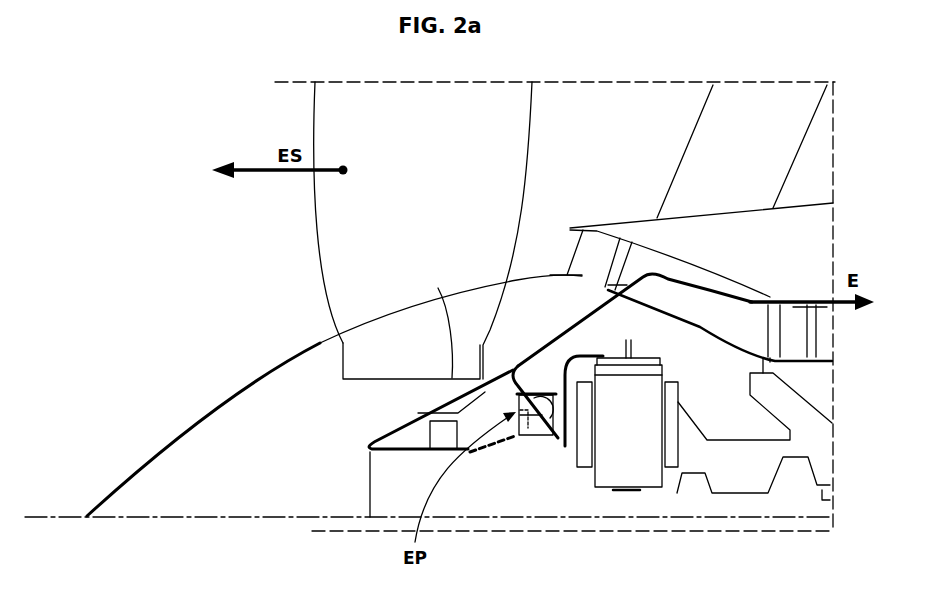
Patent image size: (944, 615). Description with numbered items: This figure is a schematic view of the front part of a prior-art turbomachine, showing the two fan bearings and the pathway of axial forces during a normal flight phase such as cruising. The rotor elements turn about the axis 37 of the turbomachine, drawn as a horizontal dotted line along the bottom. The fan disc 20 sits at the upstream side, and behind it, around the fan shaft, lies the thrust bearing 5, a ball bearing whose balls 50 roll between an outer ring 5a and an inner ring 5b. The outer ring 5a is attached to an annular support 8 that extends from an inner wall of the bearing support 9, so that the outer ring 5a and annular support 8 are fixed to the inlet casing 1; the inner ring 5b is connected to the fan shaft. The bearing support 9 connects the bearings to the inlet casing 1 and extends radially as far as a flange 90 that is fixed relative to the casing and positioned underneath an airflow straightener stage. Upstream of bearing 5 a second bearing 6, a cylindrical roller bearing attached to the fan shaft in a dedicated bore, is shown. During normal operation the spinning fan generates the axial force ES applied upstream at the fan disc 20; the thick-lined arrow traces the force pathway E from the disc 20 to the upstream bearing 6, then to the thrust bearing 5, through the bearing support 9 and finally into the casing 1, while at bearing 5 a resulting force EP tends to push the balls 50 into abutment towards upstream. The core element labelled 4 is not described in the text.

The inlet casing 1 is at (686, 309).
The engine core 4 is at (627, 415).
The bearing 5 is at (566, 458).
The outer ring 5a is at (506, 400).
The inner ring 5b is at (506, 434).
The second bearing 6 is at (417, 437).
The annular support 8 is at (528, 380).
The bearing support 9 is at (562, 316).
The fan disc 20 is at (411, 361).
The axis 37 is at (236, 519).
The balls 50 is at (535, 422).
The flange 90 is at (596, 286).